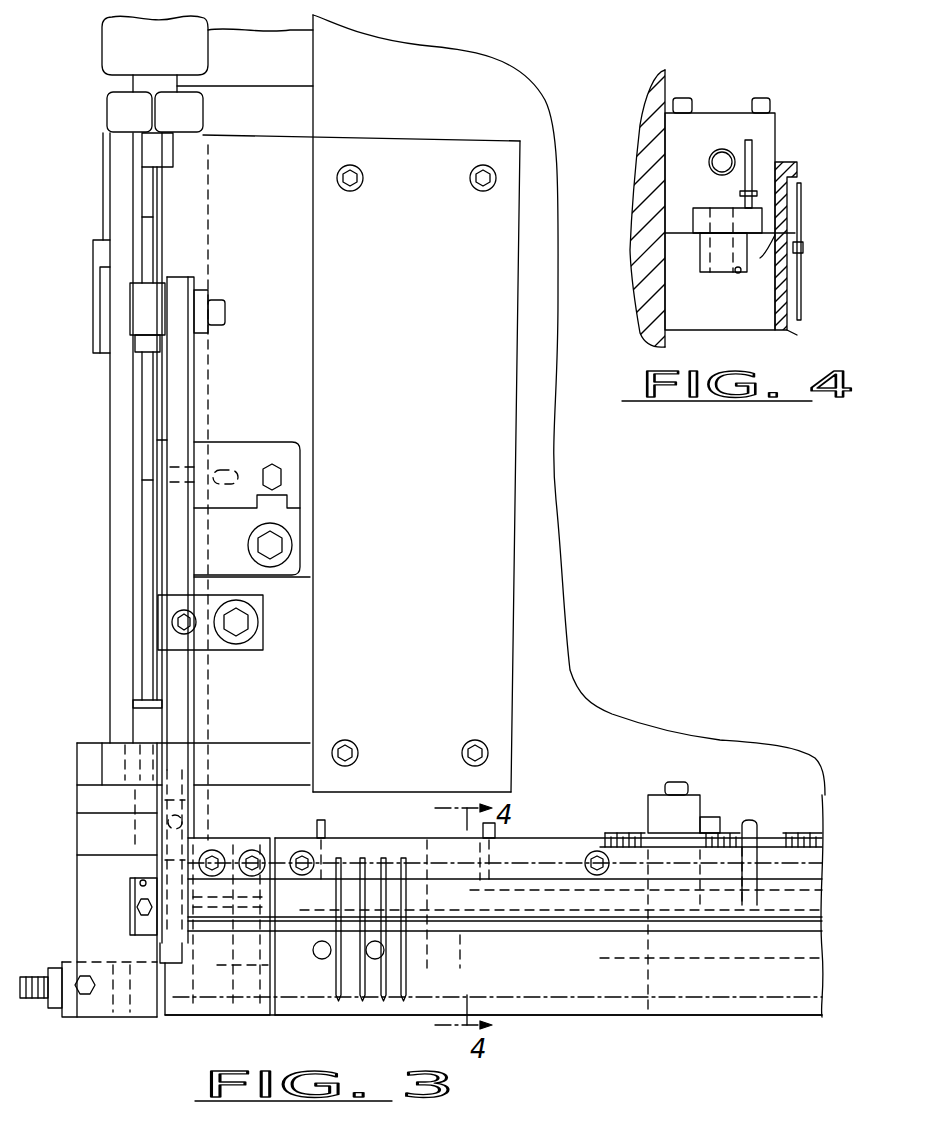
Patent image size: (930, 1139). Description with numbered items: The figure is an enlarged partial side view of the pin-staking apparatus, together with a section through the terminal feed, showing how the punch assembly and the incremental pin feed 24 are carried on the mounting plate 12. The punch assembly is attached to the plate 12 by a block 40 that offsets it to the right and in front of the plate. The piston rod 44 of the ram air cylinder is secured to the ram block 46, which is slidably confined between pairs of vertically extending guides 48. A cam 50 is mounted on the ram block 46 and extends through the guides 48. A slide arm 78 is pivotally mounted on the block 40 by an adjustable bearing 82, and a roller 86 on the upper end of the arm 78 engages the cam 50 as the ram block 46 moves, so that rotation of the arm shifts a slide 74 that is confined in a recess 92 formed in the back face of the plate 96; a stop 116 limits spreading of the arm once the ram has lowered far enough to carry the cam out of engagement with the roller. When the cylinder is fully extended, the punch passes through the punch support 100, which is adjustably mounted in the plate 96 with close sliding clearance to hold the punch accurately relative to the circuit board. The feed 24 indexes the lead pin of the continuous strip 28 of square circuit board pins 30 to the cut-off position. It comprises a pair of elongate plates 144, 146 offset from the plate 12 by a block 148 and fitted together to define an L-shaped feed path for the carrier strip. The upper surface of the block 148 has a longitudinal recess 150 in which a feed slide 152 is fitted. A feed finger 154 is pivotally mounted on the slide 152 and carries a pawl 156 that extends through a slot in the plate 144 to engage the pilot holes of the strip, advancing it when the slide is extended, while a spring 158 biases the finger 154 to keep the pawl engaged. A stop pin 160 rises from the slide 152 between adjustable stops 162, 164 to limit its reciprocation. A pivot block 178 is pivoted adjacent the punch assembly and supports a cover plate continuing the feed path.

In FIG. 3, the mounting plate 12 is at (501, 516).
In FIG. 3, the incremental pin feed 24 is at (617, 805).
In FIG. 3, the continuous strip 28 is at (341, 1002).
In FIG. 3, the circuit board pins 30 is at (386, 1002).
In FIG. 3, the block 40 is at (361, 463).
In FIG. 3, the piston rod 44 is at (134, 80).
In FIG. 3, the ram block 46 is at (103, 190).
In FIG. 3, the guides 48 is at (150, 390).
In FIG. 3, the cam 50 is at (160, 238).
In FIG. 3, the slide 74 is at (135, 890).
In FIG. 3, the slide arm 78 is at (193, 386).
In FIG. 3, the adjustable bearing 82 is at (205, 468).
In FIG. 3, the roller 86 is at (140, 305).
In FIG. 3, the recess 92 is at (144, 880).
In FIG. 3, the plate 96 is at (82, 912).
In FIG. 3, the punch support 100 is at (115, 1017).
In FIG. 3, the stop 116 is at (196, 632).
In FIG. 4, the elongate plate 144 is at (790, 337).
In FIG. 3, the elongate plate 146 is at (392, 845).
In FIG. 4, the elongate plate 146 is at (790, 215).
In FIG. 3, the block 148 is at (498, 976).
In FIG. 4, the block 148 is at (712, 328).
In FIG. 4, the longitudinal recess 150 is at (740, 274).
In FIG. 4, the feed slide 152 is at (706, 274).
In FIG. 4, the feed finger 154 is at (712, 210).
In FIG. 4, the pawl 156 is at (798, 262).
In FIG. 3, the spring 158 is at (542, 870).
In FIG. 3, the stop pin 160 is at (752, 822).
In FIG. 3, the adjustable stop 162 is at (722, 825).
In FIG. 3, the adjustable stop 164 is at (800, 832).
In FIG. 3, the pivot block 178 is at (217, 1016).